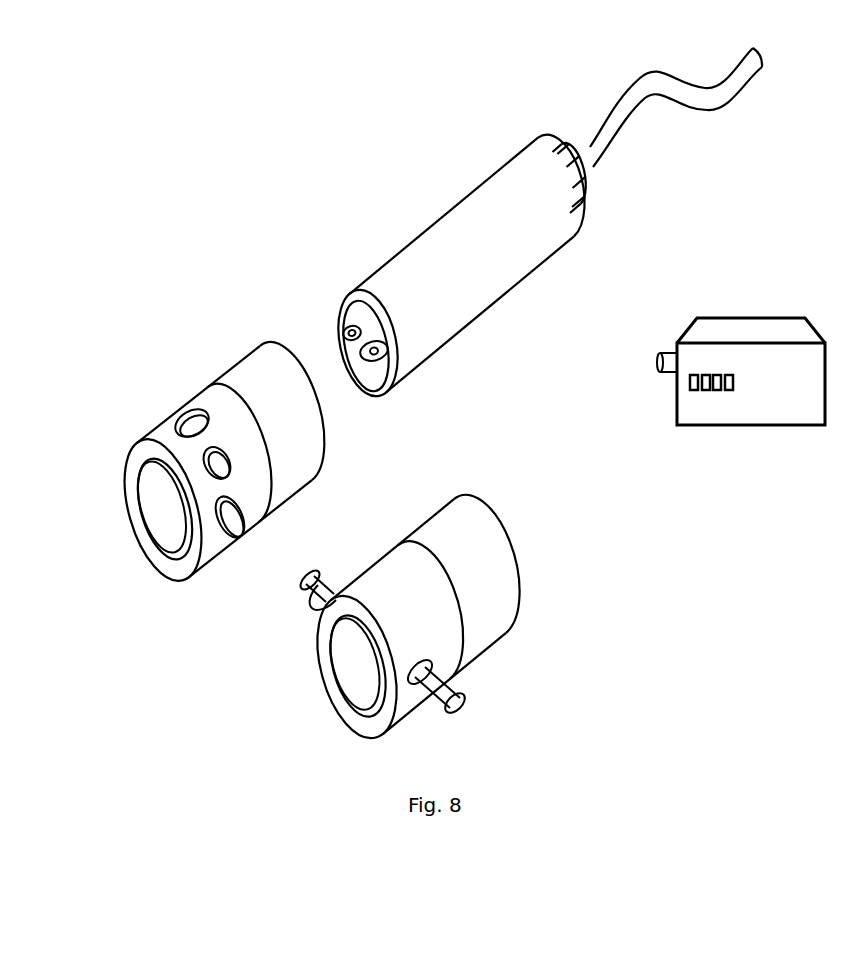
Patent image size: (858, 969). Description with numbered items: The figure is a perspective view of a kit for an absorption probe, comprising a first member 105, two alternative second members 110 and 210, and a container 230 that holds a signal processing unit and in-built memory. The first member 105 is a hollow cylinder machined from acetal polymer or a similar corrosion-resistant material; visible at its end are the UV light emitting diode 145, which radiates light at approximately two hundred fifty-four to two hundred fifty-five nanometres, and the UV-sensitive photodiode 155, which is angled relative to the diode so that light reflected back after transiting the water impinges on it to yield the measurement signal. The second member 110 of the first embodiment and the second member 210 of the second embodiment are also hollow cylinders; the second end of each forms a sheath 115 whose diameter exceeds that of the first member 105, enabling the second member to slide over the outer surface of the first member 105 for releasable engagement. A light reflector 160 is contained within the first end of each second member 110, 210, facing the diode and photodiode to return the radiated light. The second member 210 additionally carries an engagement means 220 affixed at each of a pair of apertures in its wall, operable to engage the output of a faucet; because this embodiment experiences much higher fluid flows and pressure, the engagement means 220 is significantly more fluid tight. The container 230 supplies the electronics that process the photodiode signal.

The first member 105 is at (428, 160).
The second member 110 is at (135, 317).
The sheath 115 is at (262, 356).
The UV light emitting diode 145 is at (342, 313).
The UV-sensitive photodiode 155 is at (380, 354).
The light reflector 160 is at (157, 494).
The second member 210 is at (146, 438).
The engagement means 220 is at (452, 684).
The container 230 is at (735, 335).